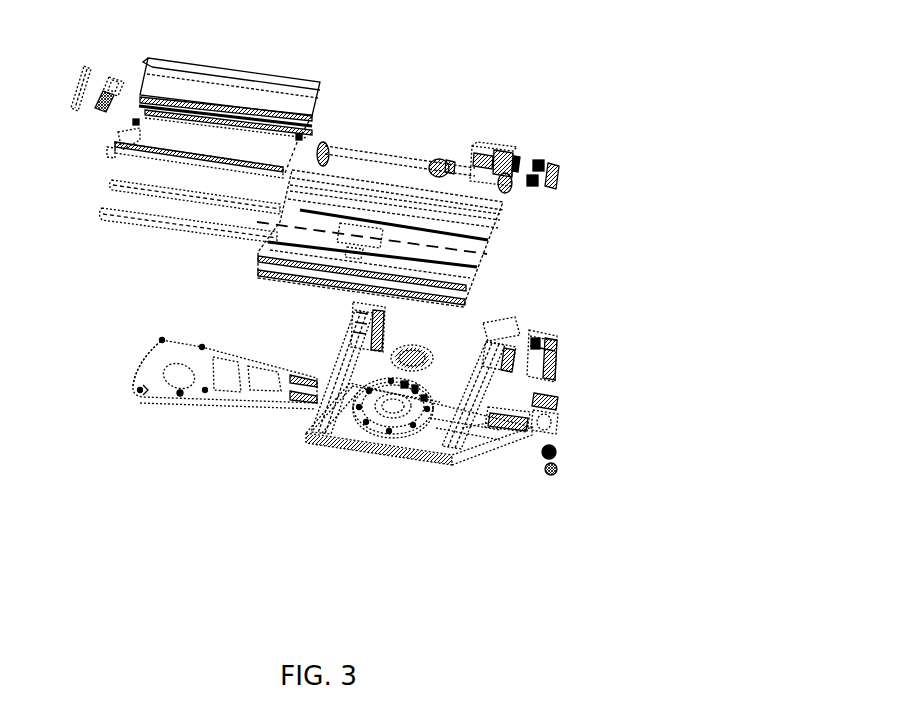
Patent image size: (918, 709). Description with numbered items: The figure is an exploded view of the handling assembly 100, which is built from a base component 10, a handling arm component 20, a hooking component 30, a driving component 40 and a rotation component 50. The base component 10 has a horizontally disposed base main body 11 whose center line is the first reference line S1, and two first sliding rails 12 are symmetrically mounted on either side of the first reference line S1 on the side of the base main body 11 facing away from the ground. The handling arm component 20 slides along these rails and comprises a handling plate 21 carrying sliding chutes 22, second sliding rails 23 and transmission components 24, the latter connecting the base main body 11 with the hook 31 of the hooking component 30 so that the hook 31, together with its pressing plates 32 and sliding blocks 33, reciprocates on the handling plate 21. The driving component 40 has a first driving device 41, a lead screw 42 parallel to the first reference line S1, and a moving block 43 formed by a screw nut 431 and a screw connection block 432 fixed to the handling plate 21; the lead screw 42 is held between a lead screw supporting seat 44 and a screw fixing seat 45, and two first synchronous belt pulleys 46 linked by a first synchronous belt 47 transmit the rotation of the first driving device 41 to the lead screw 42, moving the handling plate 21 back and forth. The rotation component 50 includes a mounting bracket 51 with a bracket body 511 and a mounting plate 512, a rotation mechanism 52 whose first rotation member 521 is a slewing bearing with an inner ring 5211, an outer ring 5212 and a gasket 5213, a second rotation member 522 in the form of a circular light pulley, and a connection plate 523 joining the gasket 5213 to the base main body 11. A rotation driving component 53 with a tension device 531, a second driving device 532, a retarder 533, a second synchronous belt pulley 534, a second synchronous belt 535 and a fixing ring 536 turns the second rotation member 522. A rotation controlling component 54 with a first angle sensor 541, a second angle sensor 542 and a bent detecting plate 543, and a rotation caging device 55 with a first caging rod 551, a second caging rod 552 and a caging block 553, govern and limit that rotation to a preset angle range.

The handling assembly 100 is at (486, 53).
The base component 10 is at (538, 216).
The base main body 11 is at (463, 233).
The first sliding rails 12 is at (458, 263).
The first reference line S1 is at (292, 224).
The handling arm component 20 is at (50, 130).
The handling plate 21 is at (200, 126).
The sliding chutes 22 is at (192, 130).
The second sliding rails 23 is at (225, 118).
The transmission components 24 is at (236, 113).
The hooking component 30 is at (140, 40).
The hook 31 is at (77, 100).
The pressing plates 32 is at (100, 104).
The sliding blocks 33 is at (115, 94).
The driving component 40 is at (583, 92).
The first driving device 41 is at (490, 145).
The lead screw 42 is at (380, 158).
The moving block 43 is at (463, 120).
The screw nut 431 is at (450, 160).
The screw connection block 432 is at (430, 166).
The lead screw supporting seat 44 is at (326, 143).
The screw fixing seat 45 is at (506, 170).
The first synchronous belt pulley 46 is at (534, 174).
The first synchronous belt 47 is at (555, 162).
The rotation component 50 is at (78, 274).
The mounting bracket 51 is at (96, 276).
The bracket body 511 is at (352, 304).
The mounting plate 512 is at (362, 380).
The rotation mechanism 52 is at (96, 439).
The first rotation member 521 is at (135, 475).
The inner ring 5211 is at (400, 441).
The outer ring 5212 is at (373, 438).
The gasket 5213 is at (418, 443).
The second rotation member 522 is at (306, 440).
The connection plate 523 is at (205, 391).
The rotation driving component 53 is at (604, 300).
The tension device 531 is at (510, 408).
The second driving device 532 is at (556, 358).
The retarder 533 is at (552, 393).
The second synchronous belt pulley 534 is at (554, 448).
The second synchronous belt 535 is at (465, 437).
The fixing ring 536 is at (556, 467).
The rotation controlling component 54 is at (96, 328).
The first angle sensor 541 is at (162, 340).
The second angle sensor 542 is at (140, 388).
The detecting plate 543 is at (390, 380).
The rotation caging device 55 is at (96, 381).
The first caging rod 551 is at (140, 390).
The second caging rod 552 is at (180, 394).
The caging block 553 is at (357, 390).